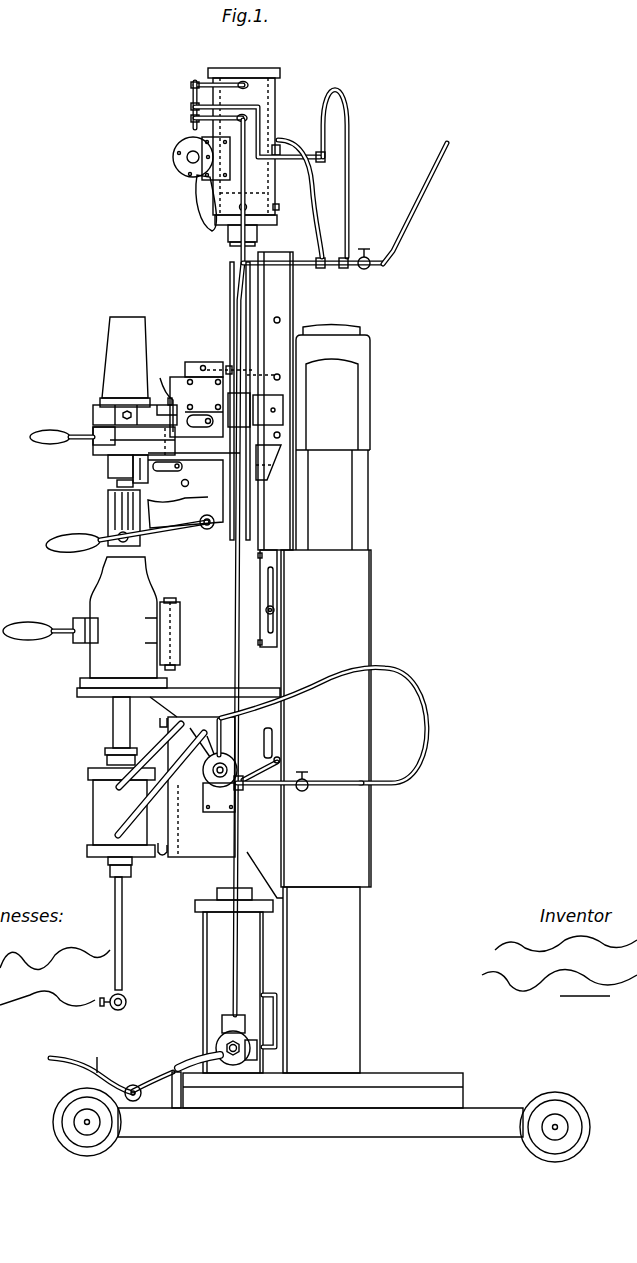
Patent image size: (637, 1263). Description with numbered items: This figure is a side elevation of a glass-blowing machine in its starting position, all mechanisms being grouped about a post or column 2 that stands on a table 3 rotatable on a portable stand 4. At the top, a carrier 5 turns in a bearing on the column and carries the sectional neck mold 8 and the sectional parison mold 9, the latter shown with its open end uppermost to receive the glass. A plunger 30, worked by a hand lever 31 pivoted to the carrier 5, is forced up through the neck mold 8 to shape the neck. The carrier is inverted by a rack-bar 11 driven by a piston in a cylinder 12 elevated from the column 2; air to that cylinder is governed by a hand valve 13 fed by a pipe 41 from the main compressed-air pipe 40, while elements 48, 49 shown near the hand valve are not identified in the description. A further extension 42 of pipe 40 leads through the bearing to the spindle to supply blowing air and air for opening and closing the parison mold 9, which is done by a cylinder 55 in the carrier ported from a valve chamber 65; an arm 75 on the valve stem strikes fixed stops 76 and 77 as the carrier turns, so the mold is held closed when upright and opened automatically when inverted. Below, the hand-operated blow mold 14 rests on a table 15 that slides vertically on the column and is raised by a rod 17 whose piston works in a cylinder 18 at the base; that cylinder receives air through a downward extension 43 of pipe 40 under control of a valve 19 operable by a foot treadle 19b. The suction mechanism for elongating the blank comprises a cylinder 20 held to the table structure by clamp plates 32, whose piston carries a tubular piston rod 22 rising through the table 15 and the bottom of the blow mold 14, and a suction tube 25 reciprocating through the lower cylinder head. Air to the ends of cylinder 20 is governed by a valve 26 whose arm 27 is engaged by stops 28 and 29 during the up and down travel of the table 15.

The post or column 2 is at (373, 576).
The table 3 is at (405, 1074).
The portable stand 4 is at (328, 1134).
The carrier 5 is at (199, 499).
The sectional neck mold 8 is at (118, 447).
The sectional blank or parison mold 9 is at (135, 371).
The rack-bar 11 is at (250, 528).
The cylinder 12 is at (268, 92).
The hand valve 13 is at (180, 160).
The blow mold 14 is at (91, 622).
The table 15 is at (198, 690).
The rod 17 is at (219, 877).
The cylinder 18 is at (205, 972).
The valve 19 is at (216, 1039).
The foot treadle 19b is at (103, 1077).
The cylinder 20 is at (93, 815).
The tubular piston rod 22 is at (113, 725).
The suction or exhaust tube 25 is at (123, 933).
The valve 26 is at (207, 780).
The arm 27 is at (280, 757).
The stop 28 is at (282, 778).
The stop 29 is at (276, 609).
The plunger 30 is at (108, 497).
The hand lever 31 is at (46, 545).
The clamp plates 32 is at (163, 856).
The pipe 40 is at (358, 270).
The pipe 41 is at (191, 104).
The extension pipe 42 is at (325, 213).
The downward extension pipe 43 is at (237, 299).
The pipe 48 is at (207, 82).
The pipe 49 is at (193, 124).
The cylinder 55 is at (191, 407).
The valve chamber 65 is at (192, 362).
The arm 75 is at (229, 366).
The fixed stop 76 is at (271, 366).
The fixed stop 77 is at (265, 478).